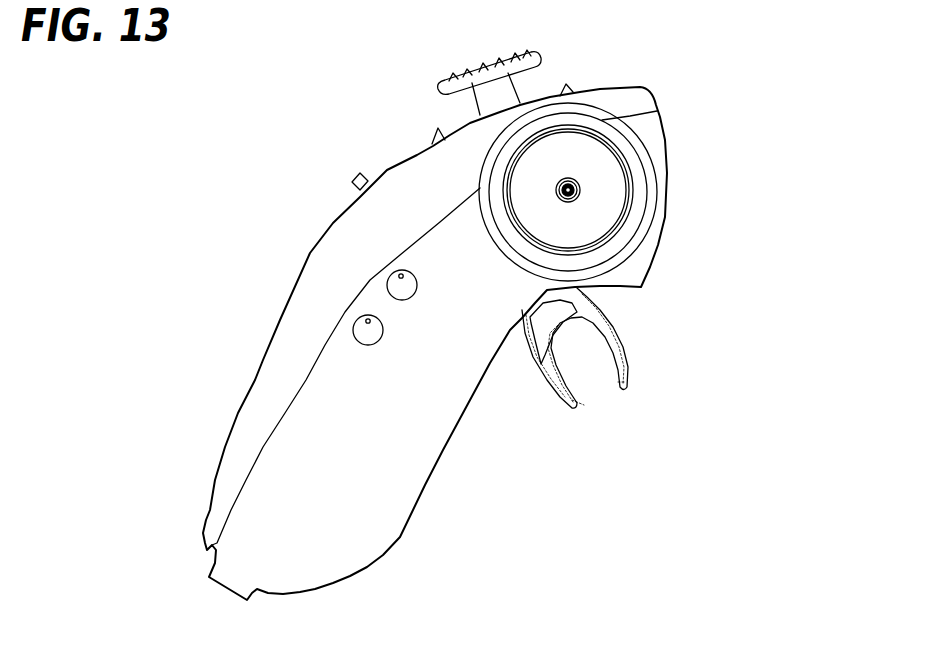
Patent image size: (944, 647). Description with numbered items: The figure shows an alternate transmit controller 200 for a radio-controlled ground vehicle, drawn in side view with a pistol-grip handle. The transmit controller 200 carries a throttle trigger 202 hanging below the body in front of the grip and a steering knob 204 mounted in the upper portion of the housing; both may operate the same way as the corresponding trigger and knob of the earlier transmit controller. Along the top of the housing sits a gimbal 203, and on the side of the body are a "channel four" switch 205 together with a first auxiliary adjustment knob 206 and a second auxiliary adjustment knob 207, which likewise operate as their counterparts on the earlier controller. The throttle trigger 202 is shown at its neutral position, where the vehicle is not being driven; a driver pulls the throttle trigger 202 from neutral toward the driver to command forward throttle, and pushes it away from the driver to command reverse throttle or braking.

The transmit controller 200 is at (743, 138).
The throttle trigger 202 is at (578, 412).
The gimbal 203 is at (455, 77).
The steering knob 204 is at (594, 103).
The channel four switch 205 is at (352, 181).
The first auxiliary adjustment knob 206 is at (386, 271).
The second auxiliary adjustment knob 207 is at (363, 317).